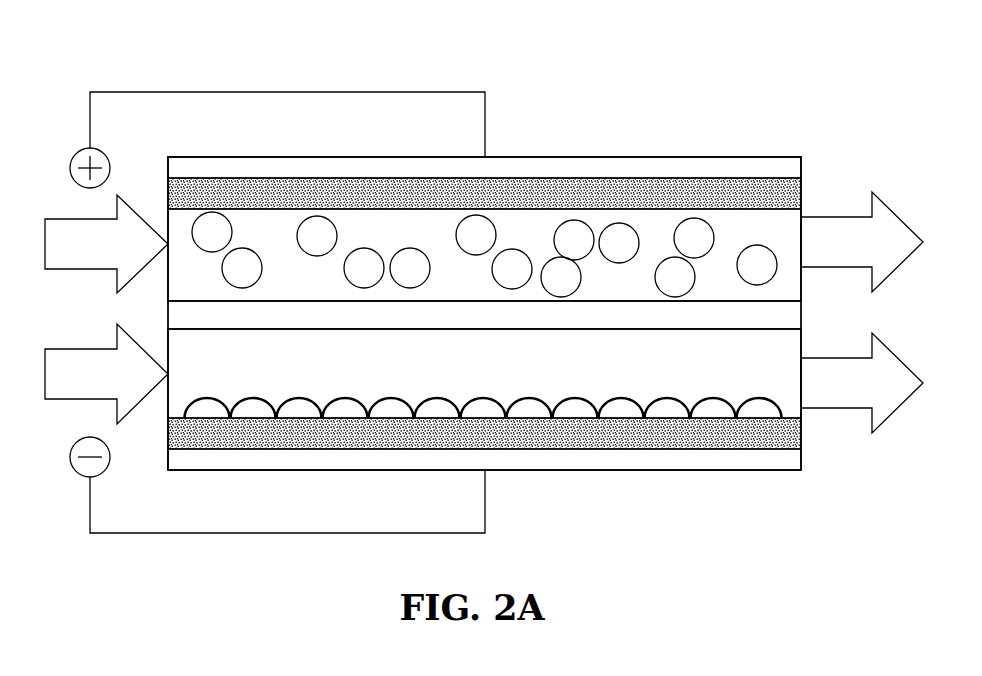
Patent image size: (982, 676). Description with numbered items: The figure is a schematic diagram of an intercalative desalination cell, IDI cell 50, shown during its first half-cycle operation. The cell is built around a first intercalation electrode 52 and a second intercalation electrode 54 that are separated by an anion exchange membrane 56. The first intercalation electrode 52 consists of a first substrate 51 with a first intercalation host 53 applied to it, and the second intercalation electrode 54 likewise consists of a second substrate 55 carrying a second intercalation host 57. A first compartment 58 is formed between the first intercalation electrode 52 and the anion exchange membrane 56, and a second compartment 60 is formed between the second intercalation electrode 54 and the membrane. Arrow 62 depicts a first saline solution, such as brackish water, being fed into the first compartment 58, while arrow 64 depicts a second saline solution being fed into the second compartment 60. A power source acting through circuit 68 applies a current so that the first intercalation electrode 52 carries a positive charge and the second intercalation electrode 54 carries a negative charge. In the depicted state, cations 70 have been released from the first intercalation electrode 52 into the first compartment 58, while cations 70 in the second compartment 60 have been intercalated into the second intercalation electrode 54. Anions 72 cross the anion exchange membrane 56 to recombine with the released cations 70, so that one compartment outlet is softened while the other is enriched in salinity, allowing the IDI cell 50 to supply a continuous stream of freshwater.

The IDI cell 50 is at (790, 502).
The first substrate 51 is at (801, 167).
The first intercalation electrode 52 is at (700, 142).
The first intercalation host 53 is at (801, 195).
The second intercalation electrode 54 is at (598, 493).
The second substrate 55 is at (801, 458).
The anion exchange membrane 56 is at (801, 313).
The second intercalation host 57 is at (801, 433).
The first compartment 58 is at (377, 239).
The second compartment 60 is at (471, 372).
The arrow 62 is at (45, 245).
The arrow 64 is at (45, 374).
The circuit 68 is at (222, 92).
The cations 70 is at (390, 418).
The anions 72 is at (618, 223).